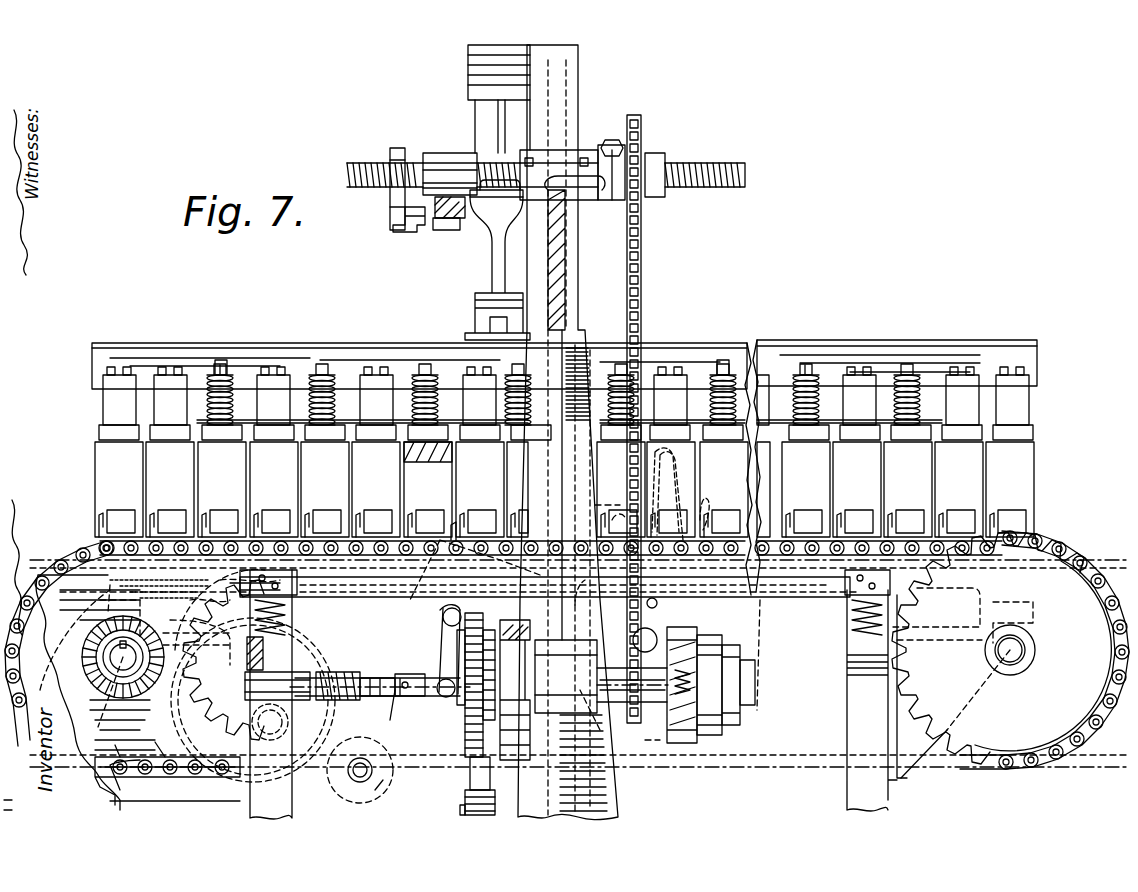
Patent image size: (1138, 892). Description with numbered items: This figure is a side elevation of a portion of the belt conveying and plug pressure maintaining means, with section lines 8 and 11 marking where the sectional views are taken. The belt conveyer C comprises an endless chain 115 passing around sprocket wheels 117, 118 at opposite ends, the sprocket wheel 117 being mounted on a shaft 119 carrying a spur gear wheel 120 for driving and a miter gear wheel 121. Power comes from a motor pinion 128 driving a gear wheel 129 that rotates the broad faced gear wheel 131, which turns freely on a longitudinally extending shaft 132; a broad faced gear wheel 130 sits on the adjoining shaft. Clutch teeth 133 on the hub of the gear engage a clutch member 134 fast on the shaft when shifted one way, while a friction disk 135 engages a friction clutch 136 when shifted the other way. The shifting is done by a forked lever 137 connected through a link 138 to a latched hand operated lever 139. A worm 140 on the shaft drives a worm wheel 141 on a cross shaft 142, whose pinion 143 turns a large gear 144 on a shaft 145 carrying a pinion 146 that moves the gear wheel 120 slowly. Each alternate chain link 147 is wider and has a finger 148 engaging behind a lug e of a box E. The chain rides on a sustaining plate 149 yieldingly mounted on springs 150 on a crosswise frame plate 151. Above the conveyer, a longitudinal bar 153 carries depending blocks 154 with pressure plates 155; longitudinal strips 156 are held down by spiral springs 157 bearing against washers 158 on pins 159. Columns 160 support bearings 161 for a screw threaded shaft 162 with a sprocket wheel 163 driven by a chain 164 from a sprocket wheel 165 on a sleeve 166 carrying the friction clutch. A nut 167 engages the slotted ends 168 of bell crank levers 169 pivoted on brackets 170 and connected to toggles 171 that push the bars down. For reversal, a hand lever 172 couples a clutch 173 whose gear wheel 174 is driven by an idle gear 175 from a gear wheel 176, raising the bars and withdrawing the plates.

The section line 8— 8 is at (405, 755).
The section line 11— 11 is at (312, 605).
The endless chain 115 is at (35, 603).
The sprocket wheel 117 is at (158, 692).
The sprocket wheel 118 is at (1001, 655).
The shaft 119 is at (99, 692).
The spur gear wheel 120 is at (165, 793).
The miter gear wheel 121 is at (88, 639).
The pinion 128 is at (496, 800).
The gear wheel 129 is at (472, 788).
The broad faced gear wheel 130 is at (485, 645).
The broad faced gear wheel 131 is at (473, 720).
The longitudinally extending shaft 132 is at (390, 678).
The clutch teeth 133 is at (393, 712).
The clutch member 134 is at (420, 677).
The friction disk 135 is at (510, 650).
The friction clutch 136 is at (535, 705).
The forked lever 137 is at (443, 626).
The link 138 is at (515, 536).
The hand operated lever 139 is at (622, 465).
The worm 140 is at (358, 672).
The worm wheel 141 is at (326, 708).
The cross shaft 142 is at (352, 782).
The pinion 143 is at (394, 788).
The large gear 144 is at (330, 668).
The shaft 145 is at (220, 654).
The pinion 146 is at (277, 714).
The chain link 147 is at (408, 536).
The finger 148 is at (498, 536).
The sustaining plate 149 is at (795, 588).
The spring 150 is at (244, 608).
The frame plate 151 is at (250, 808).
The longitudinal bar 153 is at (284, 346).
The block 154 is at (116, 396).
The pressure plate 155 is at (155, 432).
The longitudinal strip 156 is at (384, 420).
The spiral spring 157 is at (210, 400).
The washer 158 is at (224, 362).
The pin 159 is at (224, 425).
The column 160 is at (586, 352).
The bearing 161 is at (578, 155).
The screw threaded shaft 162 is at (688, 163).
The sprocket wheel 163 is at (642, 132).
The chain 164 is at (643, 250).
The sprocket wheel 165 is at (652, 740).
The sleeve 166 is at (625, 708).
The nut 167 is at (430, 153).
The slotted end 168 is at (425, 230).
The bell crank lever 169 is at (407, 206).
The bracket 170 is at (465, 148).
The toggle 171 is at (488, 103).
The hand lever 172 is at (706, 514).
The clutch 173 is at (690, 733).
The gear wheel 174 is at (738, 710).
The idle gear 175 is at (732, 732).
The gear wheel 176 is at (748, 636).
The box E is at (564, 491).
The lug e is at (120, 517).
The belt conveyer C is at (452, 525).